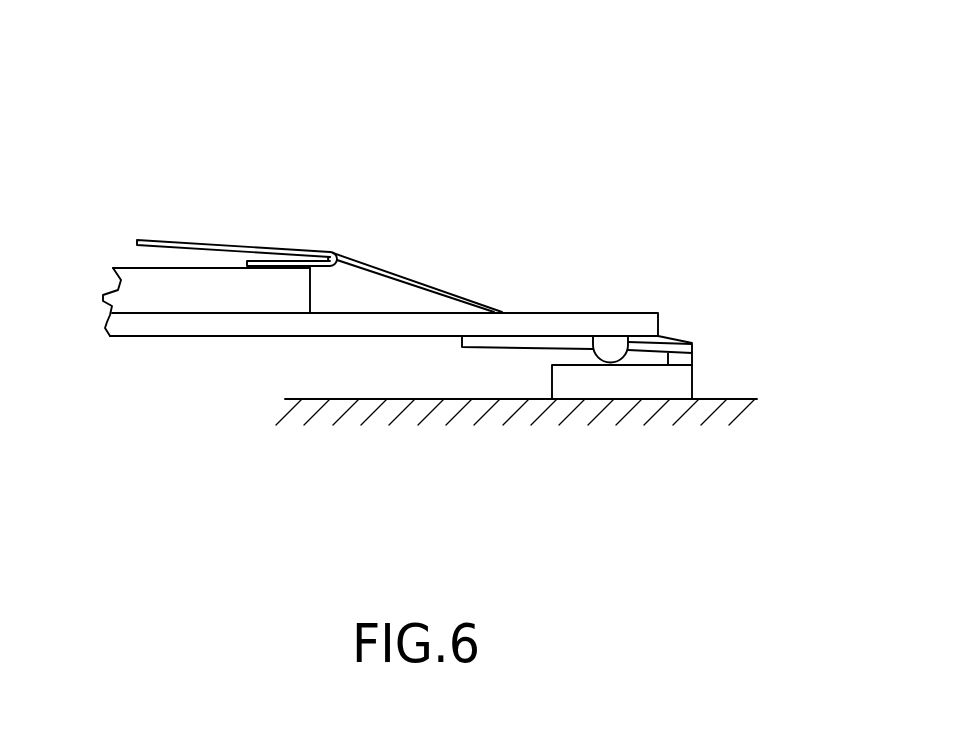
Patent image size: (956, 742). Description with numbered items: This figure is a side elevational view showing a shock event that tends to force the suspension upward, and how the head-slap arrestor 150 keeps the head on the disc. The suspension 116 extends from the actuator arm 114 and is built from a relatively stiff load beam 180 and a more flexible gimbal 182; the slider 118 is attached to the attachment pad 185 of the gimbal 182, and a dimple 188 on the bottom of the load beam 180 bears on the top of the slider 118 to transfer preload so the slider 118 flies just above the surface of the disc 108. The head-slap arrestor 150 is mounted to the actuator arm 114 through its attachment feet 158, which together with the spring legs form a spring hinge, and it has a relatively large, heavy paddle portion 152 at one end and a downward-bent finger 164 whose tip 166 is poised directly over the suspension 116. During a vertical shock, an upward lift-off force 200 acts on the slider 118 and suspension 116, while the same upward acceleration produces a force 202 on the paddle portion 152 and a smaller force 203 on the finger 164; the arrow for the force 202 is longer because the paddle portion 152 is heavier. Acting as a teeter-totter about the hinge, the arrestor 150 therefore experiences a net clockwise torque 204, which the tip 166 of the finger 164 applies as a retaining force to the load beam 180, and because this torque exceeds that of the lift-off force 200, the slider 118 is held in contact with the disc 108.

The disc 108 is at (742, 399).
The actuator arm 114 is at (137, 288).
The suspension 116 is at (139, 352).
The slider 118 is at (677, 383).
The head-slap arrestor 150 is at (286, 232).
The paddle portion 152 is at (150, 238).
The attachment foot 158 is at (267, 266).
The finger 164 is at (367, 258).
The tip of the finger 166 is at (508, 312).
The load beam 180 is at (302, 332).
The gimbal 182 is at (487, 347).
The attachment pad 185 is at (685, 358).
The dimple 188 is at (613, 357).
The force arrow 200 is at (611, 308).
The force arrow 202 is at (217, 240).
The force arrow 203 is at (442, 283).
The curved arrow 204 is at (278, 83).